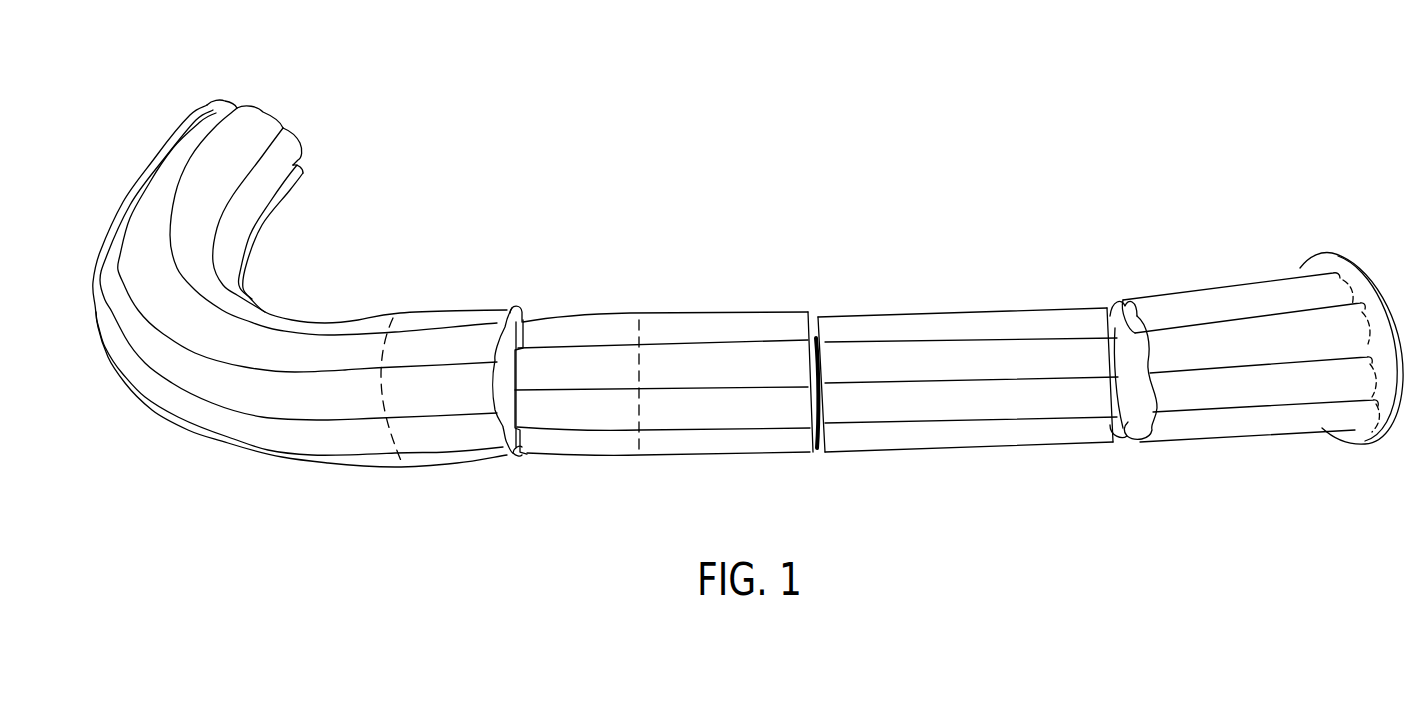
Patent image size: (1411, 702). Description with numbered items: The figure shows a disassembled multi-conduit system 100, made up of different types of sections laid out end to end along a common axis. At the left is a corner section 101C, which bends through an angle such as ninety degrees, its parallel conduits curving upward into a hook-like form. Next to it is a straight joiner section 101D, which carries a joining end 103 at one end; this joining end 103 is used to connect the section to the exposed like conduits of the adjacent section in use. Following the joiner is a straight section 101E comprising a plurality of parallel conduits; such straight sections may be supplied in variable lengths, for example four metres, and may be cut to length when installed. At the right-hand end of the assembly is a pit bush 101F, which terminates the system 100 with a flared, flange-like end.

The multi-conduit system 100 is at (1124, 92).
The corner section 101C is at (322, 261).
The joiner section 101D is at (633, 258).
The joining end 103 is at (747, 296).
The straight section 101E is at (946, 271).
The pit bush 101F is at (1357, 238).